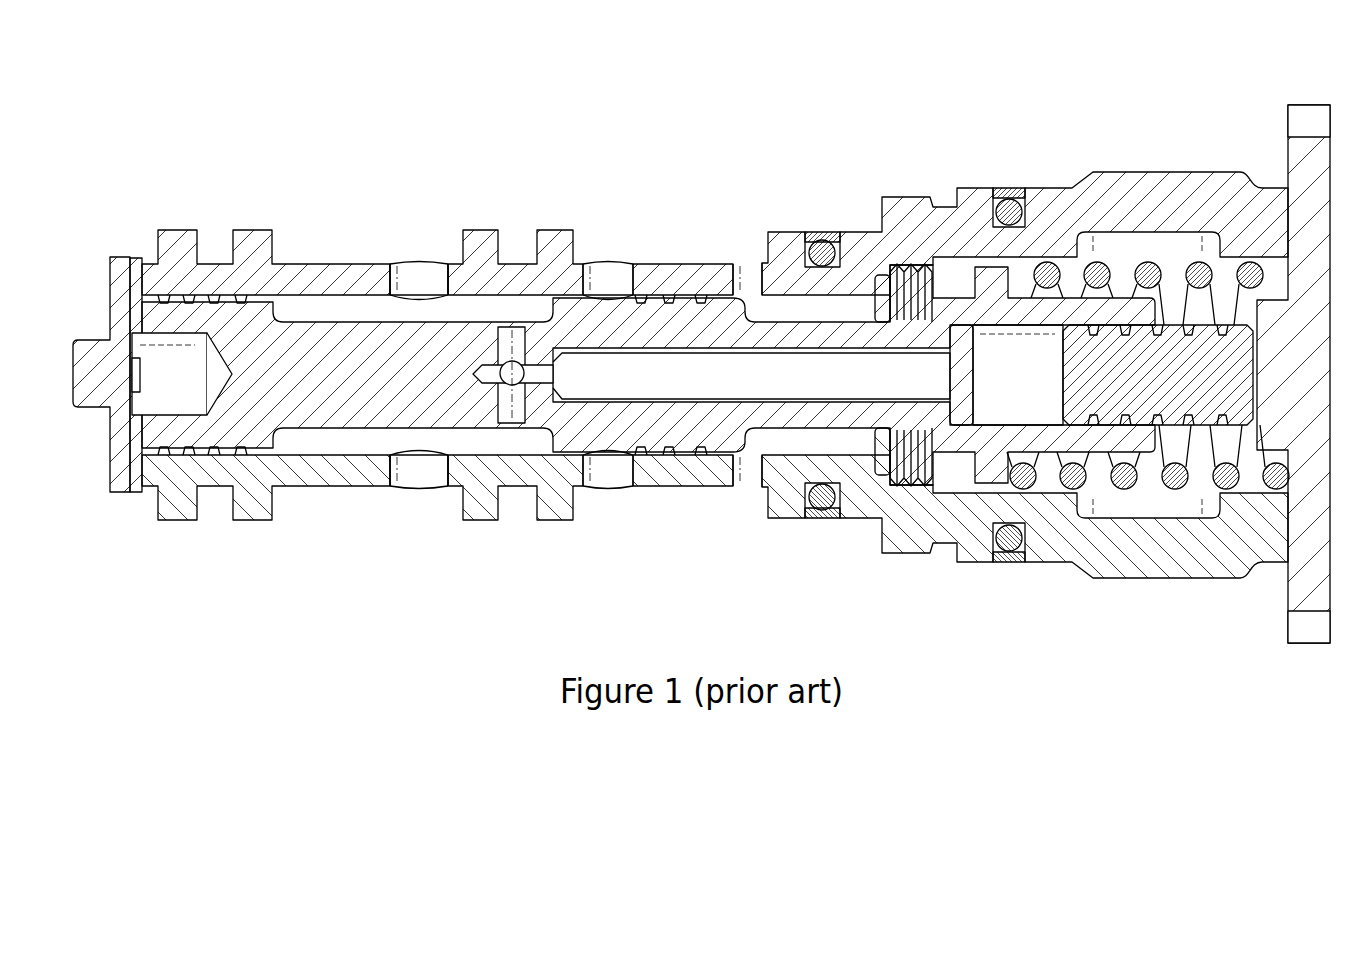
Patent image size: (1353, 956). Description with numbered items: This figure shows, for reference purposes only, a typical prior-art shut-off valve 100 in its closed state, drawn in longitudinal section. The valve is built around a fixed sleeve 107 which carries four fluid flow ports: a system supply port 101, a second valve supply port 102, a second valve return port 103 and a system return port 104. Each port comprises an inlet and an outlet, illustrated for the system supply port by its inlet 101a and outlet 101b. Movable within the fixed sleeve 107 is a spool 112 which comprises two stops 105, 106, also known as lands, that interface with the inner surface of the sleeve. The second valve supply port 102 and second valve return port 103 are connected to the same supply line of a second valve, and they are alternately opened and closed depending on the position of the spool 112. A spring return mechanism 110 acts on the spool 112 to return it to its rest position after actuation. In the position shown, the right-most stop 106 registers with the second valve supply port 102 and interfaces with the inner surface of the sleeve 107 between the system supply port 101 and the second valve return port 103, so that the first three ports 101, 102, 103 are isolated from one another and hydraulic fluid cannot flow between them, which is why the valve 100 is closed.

The shut-off valve 100 is at (213, 128).
The system supply port 101 is at (410, 268).
The inlet 101a is at (420, 470).
The outlet 101b is at (435, 273).
The second valve supply port 102 is at (603, 268).
The second valve return port 103 is at (747, 268).
The system return port 104 is at (943, 195).
The stop 105 is at (203, 315).
The stop 106 is at (683, 318).
The fixed sleeve 107 is at (320, 280).
The spring return mechanism 110 is at (1173, 488).
The spool 112 is at (343, 400).